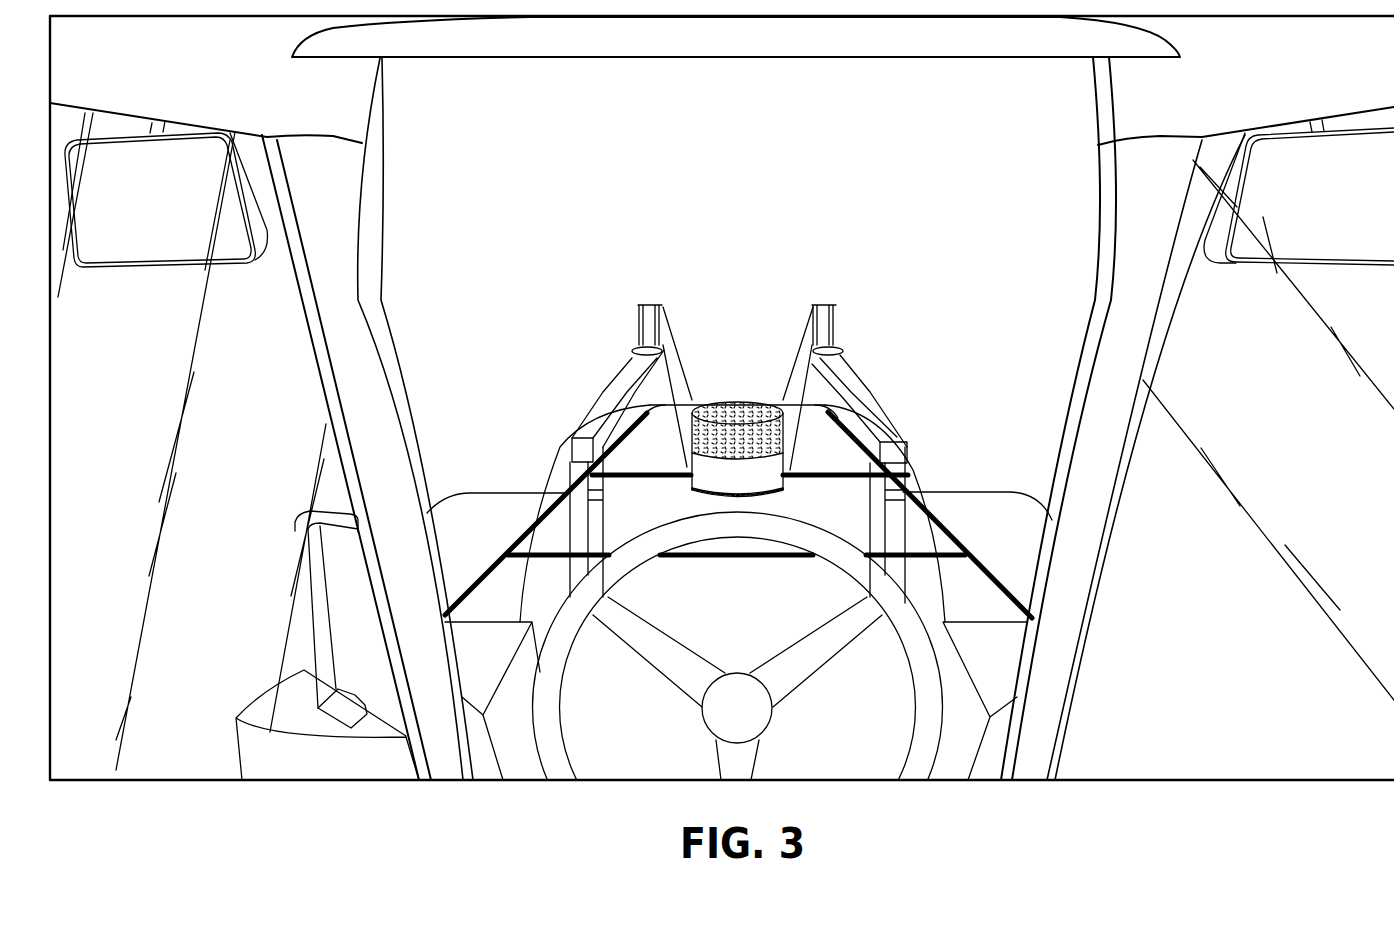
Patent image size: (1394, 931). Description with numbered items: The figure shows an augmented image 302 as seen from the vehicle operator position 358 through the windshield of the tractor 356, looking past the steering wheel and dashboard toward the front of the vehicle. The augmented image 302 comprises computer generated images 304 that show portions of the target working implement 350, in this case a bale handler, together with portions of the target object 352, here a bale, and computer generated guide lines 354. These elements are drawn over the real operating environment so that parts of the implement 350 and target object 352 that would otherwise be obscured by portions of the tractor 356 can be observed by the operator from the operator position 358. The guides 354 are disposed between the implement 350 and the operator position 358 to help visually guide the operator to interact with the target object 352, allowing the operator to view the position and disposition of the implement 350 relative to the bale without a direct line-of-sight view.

The augmented image 302 is at (757, 312).
The computer generated images 304 is at (624, 395).
The target working implement 350 is at (712, 477).
The target object 352 is at (728, 403).
The guide lines 354 is at (527, 523).
The tractor 356 is at (913, 510).
The operator position 358 is at (552, 783).